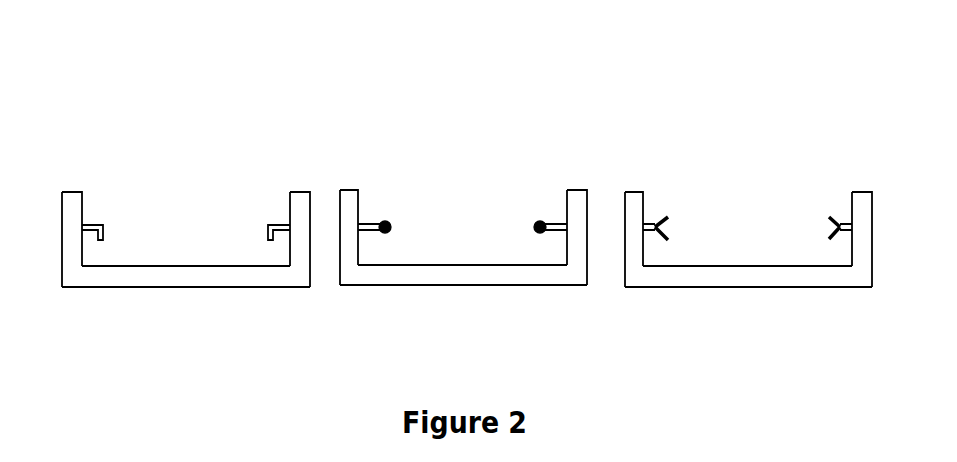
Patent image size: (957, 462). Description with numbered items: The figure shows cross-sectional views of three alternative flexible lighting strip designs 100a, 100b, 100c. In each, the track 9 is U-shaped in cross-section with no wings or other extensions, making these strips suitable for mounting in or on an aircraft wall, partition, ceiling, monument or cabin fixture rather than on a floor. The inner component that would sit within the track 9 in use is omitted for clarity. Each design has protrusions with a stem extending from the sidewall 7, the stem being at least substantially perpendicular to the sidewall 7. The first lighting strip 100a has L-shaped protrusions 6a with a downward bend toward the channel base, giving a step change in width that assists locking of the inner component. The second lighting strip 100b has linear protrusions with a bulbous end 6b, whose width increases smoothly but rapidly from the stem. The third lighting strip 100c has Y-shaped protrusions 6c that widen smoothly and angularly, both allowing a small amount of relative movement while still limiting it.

The first flexible lighting strip 100a is at (183, 146).
The second flexible lighting strip 100b is at (450, 124).
The third flexible lighting strip 100c is at (780, 126).
The L-shaped protrusion 6a is at (95, 224).
The linear protrusion with bulbous end 6b is at (373, 220).
The Y-shaped protrusion 6c is at (662, 215).
The sidewall 7 is at (630, 198).
The track 9 is at (427, 273).